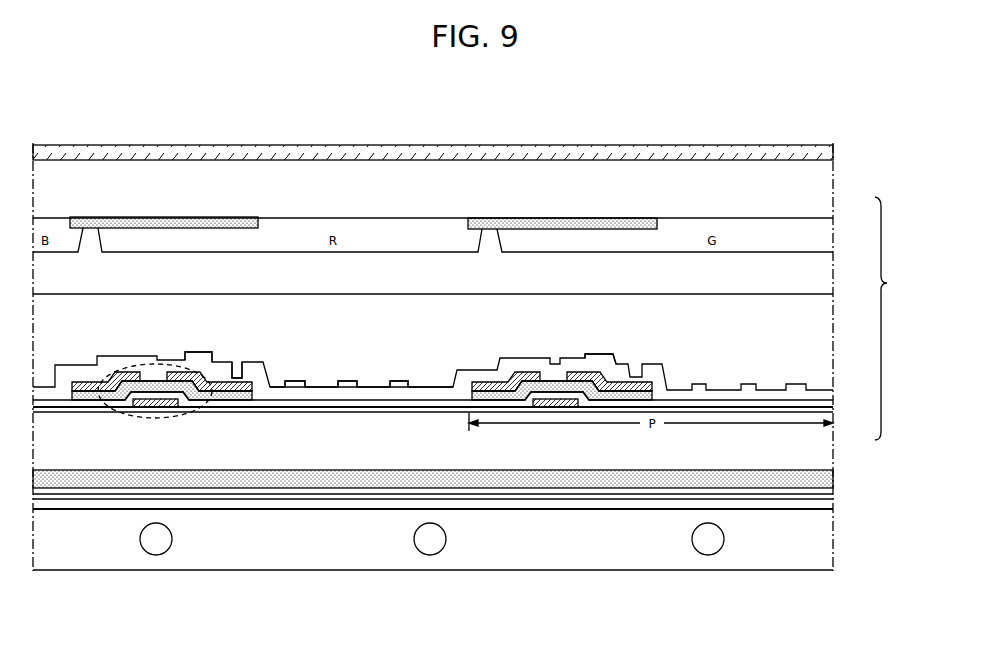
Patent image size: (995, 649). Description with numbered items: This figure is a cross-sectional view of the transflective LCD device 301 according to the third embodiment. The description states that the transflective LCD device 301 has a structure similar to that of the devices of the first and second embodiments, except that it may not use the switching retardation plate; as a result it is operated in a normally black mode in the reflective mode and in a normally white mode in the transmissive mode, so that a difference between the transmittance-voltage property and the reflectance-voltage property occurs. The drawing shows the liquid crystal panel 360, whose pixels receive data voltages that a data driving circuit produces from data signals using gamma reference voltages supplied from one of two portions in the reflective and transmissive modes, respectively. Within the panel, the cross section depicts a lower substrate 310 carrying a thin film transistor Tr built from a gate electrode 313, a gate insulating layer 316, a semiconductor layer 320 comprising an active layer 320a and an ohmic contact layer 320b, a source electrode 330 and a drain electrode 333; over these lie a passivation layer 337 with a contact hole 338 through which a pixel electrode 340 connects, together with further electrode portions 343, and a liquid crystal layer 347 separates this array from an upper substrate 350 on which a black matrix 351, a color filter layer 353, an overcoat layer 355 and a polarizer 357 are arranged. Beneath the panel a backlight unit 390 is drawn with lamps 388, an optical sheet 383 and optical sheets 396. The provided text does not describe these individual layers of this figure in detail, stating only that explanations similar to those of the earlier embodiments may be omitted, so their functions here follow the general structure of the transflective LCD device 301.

The transflective LCD device 301 is at (594, 104).
The first substrate 310 is at (822, 443).
The gate electrode 313 is at (166, 408).
The gate insulating layer 316 is at (300, 401).
The semiconductor layer 320 is at (248, 447).
The active layer 320a is at (212, 402).
The ohmic contact layer 320b is at (236, 402).
The source electrode 330 is at (118, 368).
The drain electrode 333 is at (170, 370).
The passivation layer 337 is at (430, 396).
The drain contact hole 338 is at (234, 352).
The pixel electrode 340 is at (204, 352).
The common electrode 343 is at (289, 380).
The liquid crystal layer 347 is at (815, 351).
The second substrate 350 is at (828, 190).
The black matrix 351 is at (538, 222).
The color filter layer 353 is at (560, 243).
The overcoat layer 355 is at (678, 282).
The polarizer 357 is at (836, 154).
The liquid crystal panel 360 is at (893, 318).
The diffuser sheet 383 is at (833, 481).
The lamp 388 is at (712, 556).
The backlight unit 390 is at (872, 505).
The optical sheets 396 is at (836, 492).
The thin film transistor Tr is at (157, 420).